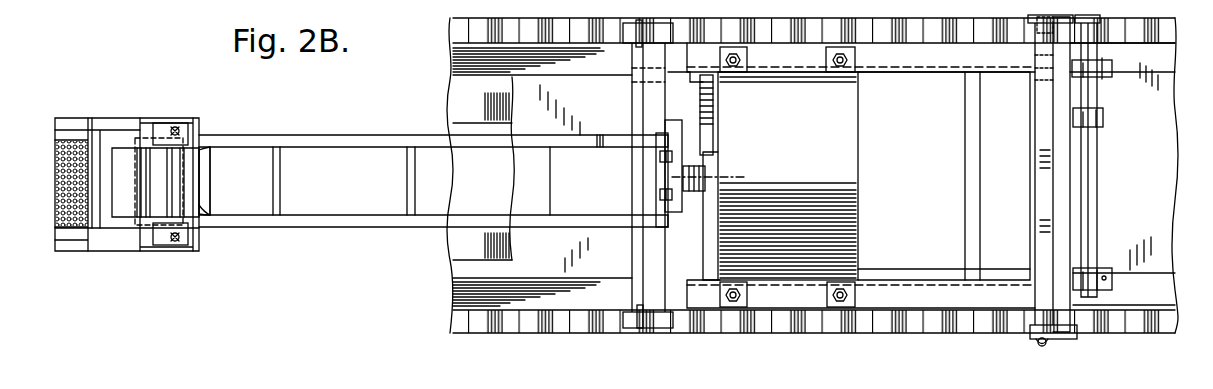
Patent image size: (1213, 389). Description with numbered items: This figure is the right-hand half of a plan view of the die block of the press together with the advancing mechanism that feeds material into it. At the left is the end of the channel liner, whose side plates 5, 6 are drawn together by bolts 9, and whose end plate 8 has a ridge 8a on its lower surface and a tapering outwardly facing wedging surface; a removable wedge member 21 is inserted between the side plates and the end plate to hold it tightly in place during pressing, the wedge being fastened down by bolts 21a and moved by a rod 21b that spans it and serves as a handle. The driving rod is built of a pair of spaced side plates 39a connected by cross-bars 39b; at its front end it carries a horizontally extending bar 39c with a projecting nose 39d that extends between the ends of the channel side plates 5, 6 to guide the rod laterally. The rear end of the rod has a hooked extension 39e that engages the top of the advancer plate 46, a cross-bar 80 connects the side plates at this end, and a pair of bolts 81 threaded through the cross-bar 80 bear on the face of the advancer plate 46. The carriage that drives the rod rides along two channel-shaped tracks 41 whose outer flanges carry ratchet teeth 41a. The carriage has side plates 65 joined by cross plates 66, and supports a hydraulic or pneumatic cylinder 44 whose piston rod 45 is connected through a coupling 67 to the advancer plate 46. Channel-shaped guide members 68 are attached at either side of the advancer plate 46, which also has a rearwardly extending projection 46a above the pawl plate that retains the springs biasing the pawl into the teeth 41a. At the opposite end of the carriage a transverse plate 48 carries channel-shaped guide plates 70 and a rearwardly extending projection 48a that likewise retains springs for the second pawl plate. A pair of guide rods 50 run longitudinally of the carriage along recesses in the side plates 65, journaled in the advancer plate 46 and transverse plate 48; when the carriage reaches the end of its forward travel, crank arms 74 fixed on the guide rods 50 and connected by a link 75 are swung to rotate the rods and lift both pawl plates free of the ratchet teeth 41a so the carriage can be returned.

The side plate 5 is at (110, 126).
The side plate 6 is at (95, 244).
The end plate 8 is at (96, 147).
The ridge 8a is at (102, 147).
The bolts 9 is at (168, 205).
The wedge member 21 is at (130, 136).
The bolts 21a is at (178, 128).
The rod 21b is at (140, 202).
The side plates 39a is at (338, 142).
The cross-bars 39b is at (281, 175).
The horizontally extending bar 39c is at (205, 172).
The projecting nose 39d is at (204, 212).
The hooked extension 39e is at (650, 137).
The tracks 41 is at (1170, 54).
The ratchet teeth 41a is at (1160, 32).
The cylinder 44 is at (847, 173).
The piston rod 45 is at (692, 193).
The advancer plate 46 is at (636, 258).
The rearwardly extending projection 46a is at (654, 246).
The transverse plate 48 is at (1040, 151).
The rearwardly extending projection 48a is at (1062, 173).
The guide rods 50 is at (993, 80).
The side plates 65 is at (910, 62).
The cross plates 66 is at (968, 190).
The coupling 67 is at (680, 152).
The guide members 68 is at (660, 325).
The guide plates 70 is at (1067, 338).
The crank arms 74 is at (1098, 194).
The link 75 is at (1098, 97).
The cross-bar 80 is at (672, 177).
The bolts 81 is at (660, 156).